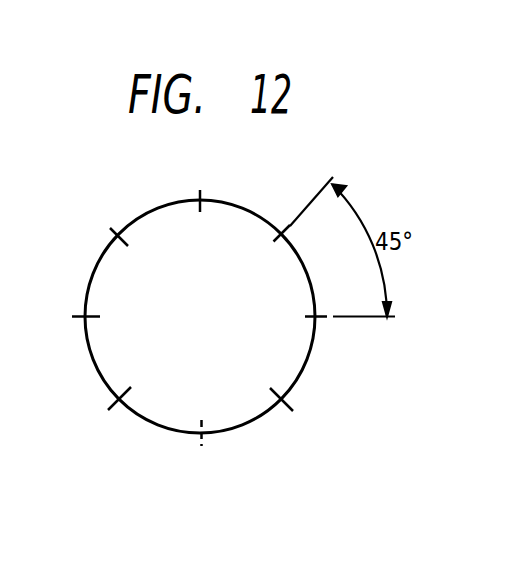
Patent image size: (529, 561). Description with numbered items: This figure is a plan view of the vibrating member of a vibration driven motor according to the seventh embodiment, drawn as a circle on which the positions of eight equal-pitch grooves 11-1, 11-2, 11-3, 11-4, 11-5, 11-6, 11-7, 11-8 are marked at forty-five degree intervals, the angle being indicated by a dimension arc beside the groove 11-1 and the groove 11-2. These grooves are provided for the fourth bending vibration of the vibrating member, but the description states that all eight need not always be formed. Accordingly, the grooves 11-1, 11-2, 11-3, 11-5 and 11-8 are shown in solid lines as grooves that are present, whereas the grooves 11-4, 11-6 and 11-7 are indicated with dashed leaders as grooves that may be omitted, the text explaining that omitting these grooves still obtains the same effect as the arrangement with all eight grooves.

The groove 11-1 is at (318, 318).
The groove 11-2 is at (280, 229).
The groove 11-3 is at (200, 195).
The groove 11-4 is at (114, 230).
The groove 11-5 is at (80, 315).
The groove 11-6 is at (118, 405).
The groove 11-7 is at (202, 448).
The groove 11-8 is at (283, 408).